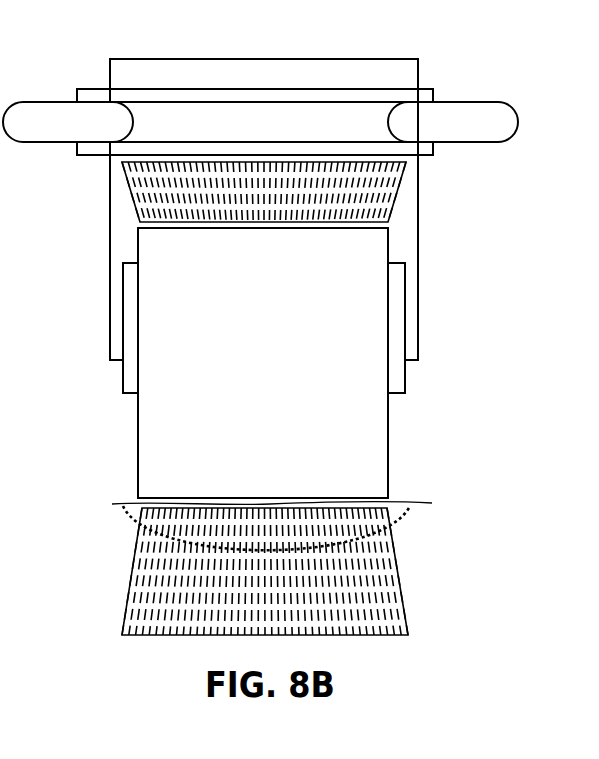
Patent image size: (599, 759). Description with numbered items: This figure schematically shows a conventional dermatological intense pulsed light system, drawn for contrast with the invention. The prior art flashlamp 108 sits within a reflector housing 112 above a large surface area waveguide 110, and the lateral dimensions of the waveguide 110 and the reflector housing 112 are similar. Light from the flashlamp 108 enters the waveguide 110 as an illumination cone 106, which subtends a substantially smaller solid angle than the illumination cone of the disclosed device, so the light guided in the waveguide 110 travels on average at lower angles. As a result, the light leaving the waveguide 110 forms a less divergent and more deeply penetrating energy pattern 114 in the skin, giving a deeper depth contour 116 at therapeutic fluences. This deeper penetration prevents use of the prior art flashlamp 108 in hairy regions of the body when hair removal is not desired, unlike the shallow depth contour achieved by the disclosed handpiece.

The cone 106 is at (398, 190).
The prior art flashlamp 108 is at (360, 110).
The waveguide 110 is at (377, 420).
The reflector housing 112 is at (408, 242).
The energy pattern 114 is at (402, 595).
The depth contour 116 is at (370, 543).